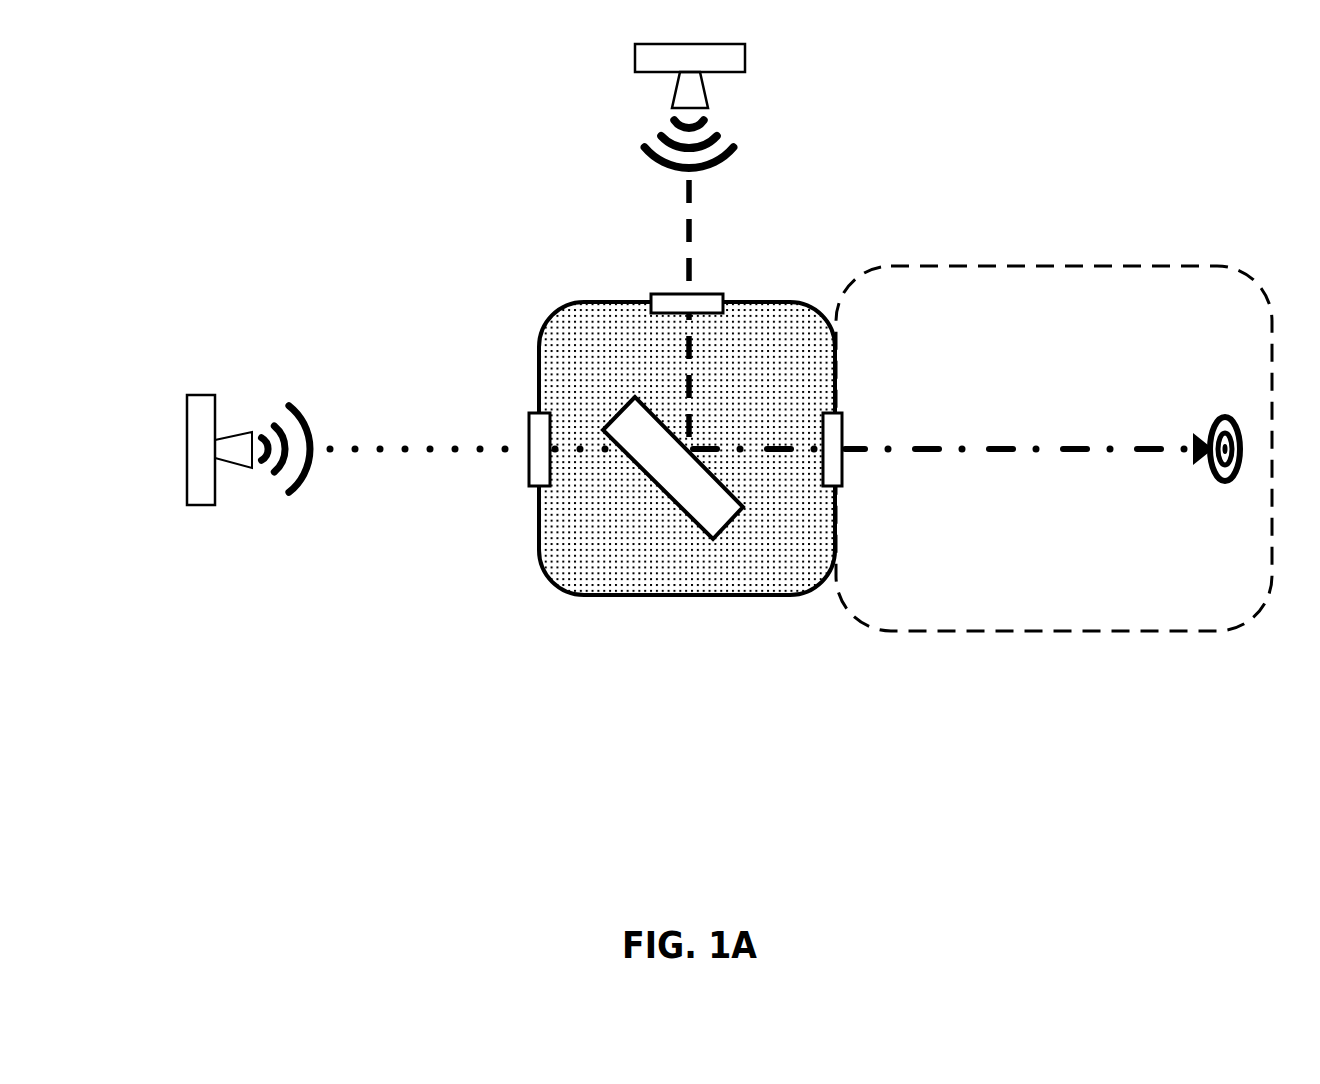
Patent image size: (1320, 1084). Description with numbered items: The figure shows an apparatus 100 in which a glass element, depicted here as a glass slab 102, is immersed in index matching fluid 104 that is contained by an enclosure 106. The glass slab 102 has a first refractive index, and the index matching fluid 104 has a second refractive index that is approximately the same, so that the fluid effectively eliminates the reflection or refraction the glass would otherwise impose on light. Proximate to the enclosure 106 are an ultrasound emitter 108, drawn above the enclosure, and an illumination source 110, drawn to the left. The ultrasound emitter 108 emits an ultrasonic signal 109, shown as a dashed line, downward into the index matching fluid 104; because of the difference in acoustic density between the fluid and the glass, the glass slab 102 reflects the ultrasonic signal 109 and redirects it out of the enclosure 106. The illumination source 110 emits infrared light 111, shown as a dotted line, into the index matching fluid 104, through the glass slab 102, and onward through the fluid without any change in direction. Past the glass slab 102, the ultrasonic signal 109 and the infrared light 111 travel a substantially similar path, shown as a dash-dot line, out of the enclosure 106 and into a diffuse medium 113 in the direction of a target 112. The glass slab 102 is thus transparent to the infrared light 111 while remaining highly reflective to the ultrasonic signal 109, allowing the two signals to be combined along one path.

The apparatus 100 is at (303, 87).
The glass slab 102 is at (673, 505).
The index matching fluid 104 is at (555, 565).
The enclosure 106 is at (728, 597).
The ultrasound emitter 108 is at (635, 57).
The ultrasonic signal 109 is at (688, 193).
The illumination source 110 is at (190, 507).
The infrared light 111 is at (405, 453).
The target 112 is at (1218, 483).
The diffuse medium 113 is at (903, 633).